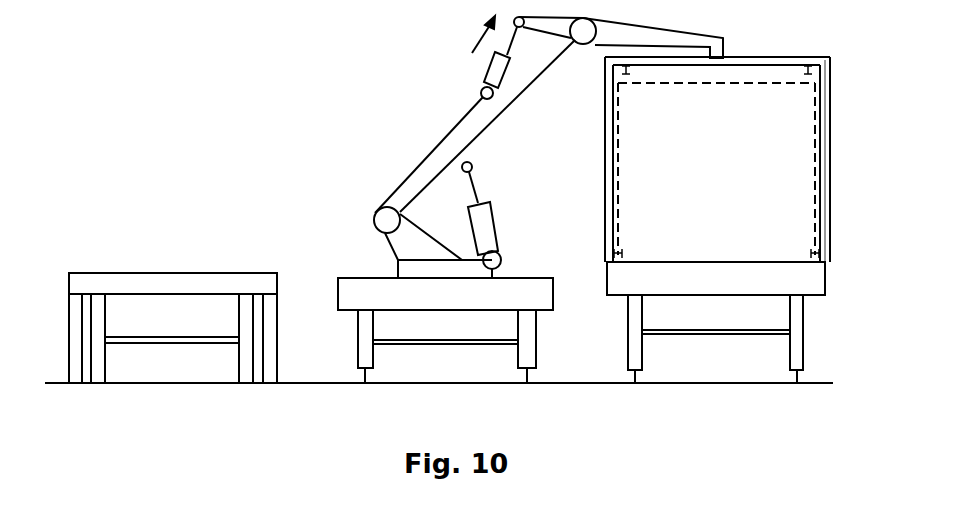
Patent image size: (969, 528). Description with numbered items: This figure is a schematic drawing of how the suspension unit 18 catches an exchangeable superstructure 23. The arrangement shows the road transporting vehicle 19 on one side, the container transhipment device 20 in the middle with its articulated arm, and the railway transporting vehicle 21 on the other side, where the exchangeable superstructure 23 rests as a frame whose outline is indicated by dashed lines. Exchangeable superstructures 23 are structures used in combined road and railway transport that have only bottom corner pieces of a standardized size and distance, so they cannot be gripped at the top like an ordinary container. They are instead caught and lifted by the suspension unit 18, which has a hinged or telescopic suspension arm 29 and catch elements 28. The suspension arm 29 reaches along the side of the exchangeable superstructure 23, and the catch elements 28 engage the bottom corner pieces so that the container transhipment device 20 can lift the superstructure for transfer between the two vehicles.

The suspension unit 18 is at (600, 82).
The road transporting vehicle 19 is at (91, 281).
The container transhipment device 20 is at (358, 283).
The railway transporting vehicle 21 is at (818, 266).
The exchangeable superstructure 23 is at (812, 136).
The catch elements 28 is at (608, 254).
The suspension arm 29 is at (826, 203).